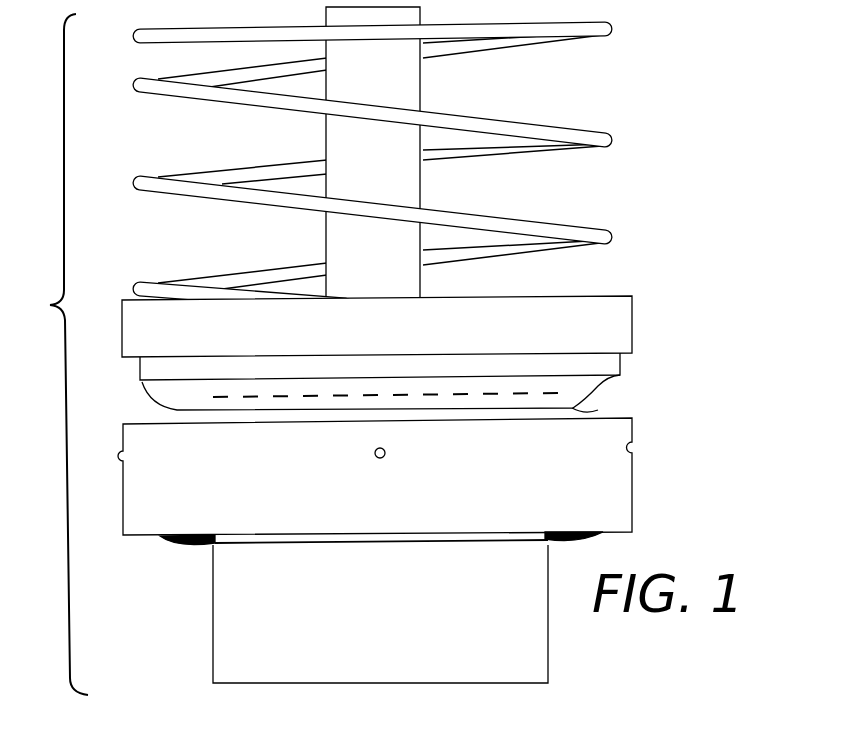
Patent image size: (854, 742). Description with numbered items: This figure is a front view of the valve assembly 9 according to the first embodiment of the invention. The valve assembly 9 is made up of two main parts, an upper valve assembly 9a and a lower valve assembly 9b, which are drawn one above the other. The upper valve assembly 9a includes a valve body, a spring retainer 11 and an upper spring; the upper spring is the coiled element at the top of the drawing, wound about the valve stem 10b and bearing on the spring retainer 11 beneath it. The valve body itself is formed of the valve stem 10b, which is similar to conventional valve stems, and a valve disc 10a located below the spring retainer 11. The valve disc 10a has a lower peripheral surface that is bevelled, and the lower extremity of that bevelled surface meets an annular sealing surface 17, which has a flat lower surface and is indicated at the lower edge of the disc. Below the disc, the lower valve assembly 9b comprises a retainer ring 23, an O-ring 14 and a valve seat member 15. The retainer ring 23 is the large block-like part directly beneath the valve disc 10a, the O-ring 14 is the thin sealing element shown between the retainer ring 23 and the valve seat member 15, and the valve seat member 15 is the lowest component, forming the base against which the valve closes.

The valve assembly 9 is at (53, 354).
The upper valve assembly 9a is at (122, 290).
The lower valve assembly 9b is at (142, 545).
The valve disc 10a is at (142, 370).
The valve stem 10b is at (412, 82).
The spring retainer 11 is at (238, 312).
The O-ring 14 is at (188, 548).
The valve seat member 15 is at (548, 647).
The annular sealing surface 17 is at (598, 408).
The retainer ring 23 is at (120, 505).